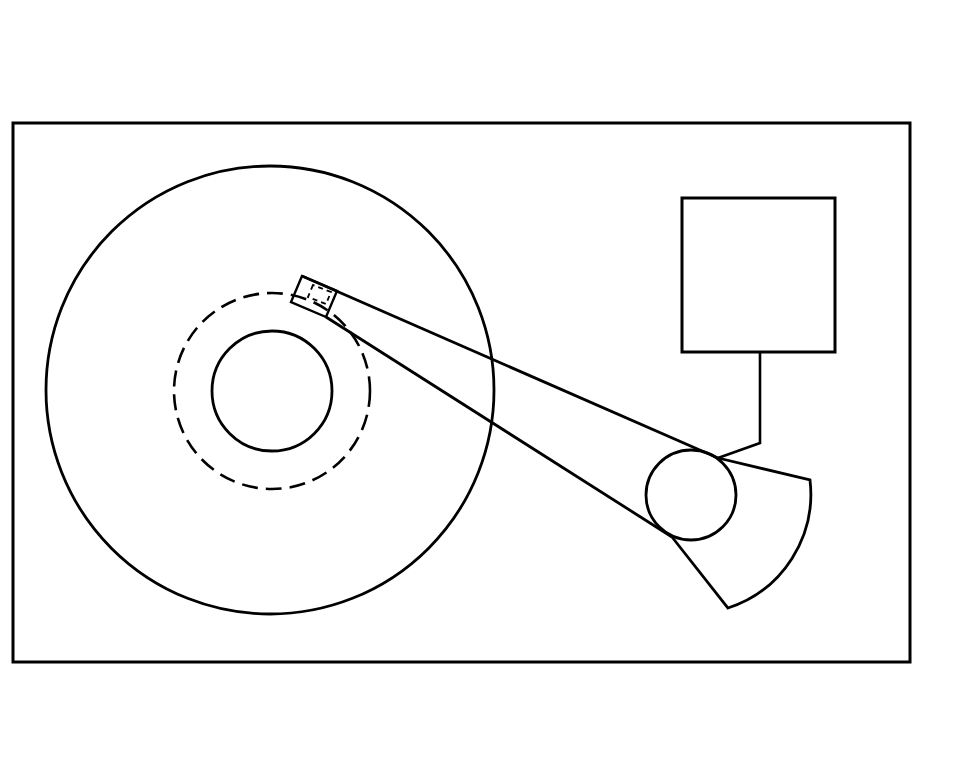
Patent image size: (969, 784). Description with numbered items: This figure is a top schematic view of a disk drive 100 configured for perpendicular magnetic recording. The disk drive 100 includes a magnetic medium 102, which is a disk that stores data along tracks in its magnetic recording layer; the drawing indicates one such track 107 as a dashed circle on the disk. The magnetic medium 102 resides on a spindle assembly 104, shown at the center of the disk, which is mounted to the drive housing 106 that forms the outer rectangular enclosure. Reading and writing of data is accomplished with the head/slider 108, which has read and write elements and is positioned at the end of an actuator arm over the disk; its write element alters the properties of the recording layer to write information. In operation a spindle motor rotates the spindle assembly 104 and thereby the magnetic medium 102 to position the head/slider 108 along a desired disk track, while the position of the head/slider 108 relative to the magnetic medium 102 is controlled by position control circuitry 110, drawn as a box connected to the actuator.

The disk drive 100 is at (212, 88).
The magnetic medium 102 is at (405, 212).
The spindle assembly 104 is at (292, 396).
The drive housing 106 is at (608, 123).
The track 107 is at (246, 297).
The head/slider 108 is at (325, 295).
The position control circuitry 110 is at (772, 293).